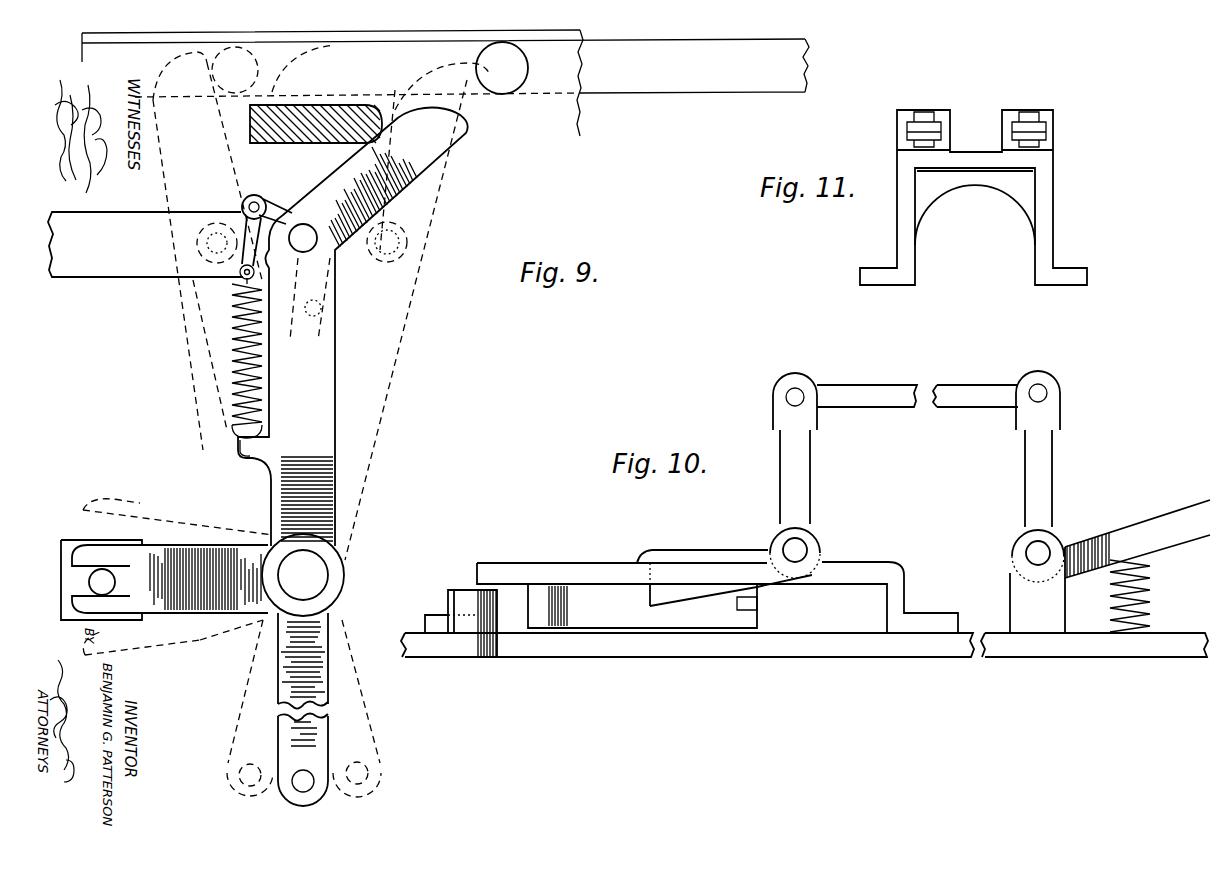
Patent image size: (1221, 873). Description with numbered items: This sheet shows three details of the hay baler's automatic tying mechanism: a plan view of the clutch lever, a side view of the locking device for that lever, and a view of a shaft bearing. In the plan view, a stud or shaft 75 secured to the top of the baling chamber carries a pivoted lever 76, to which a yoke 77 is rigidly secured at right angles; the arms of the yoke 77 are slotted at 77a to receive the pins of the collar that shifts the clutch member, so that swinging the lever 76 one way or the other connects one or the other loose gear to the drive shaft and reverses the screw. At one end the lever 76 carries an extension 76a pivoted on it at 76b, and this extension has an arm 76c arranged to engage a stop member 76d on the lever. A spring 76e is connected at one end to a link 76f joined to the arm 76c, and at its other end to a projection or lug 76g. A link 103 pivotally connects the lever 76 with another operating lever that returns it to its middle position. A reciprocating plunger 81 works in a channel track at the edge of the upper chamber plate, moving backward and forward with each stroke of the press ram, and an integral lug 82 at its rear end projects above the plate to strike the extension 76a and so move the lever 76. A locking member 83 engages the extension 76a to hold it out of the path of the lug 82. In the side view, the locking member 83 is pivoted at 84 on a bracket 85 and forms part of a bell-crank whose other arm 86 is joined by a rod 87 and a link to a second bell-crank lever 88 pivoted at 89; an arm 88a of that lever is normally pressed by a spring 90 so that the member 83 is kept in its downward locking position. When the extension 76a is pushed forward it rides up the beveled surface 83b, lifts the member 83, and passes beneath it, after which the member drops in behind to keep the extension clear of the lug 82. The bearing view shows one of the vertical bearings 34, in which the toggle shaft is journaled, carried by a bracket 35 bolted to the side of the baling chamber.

In FIG. 11, the vertical bearing 34 is at (915, 110).
In FIG. 11, the bracket 35 is at (1012, 188).
In FIG. 9, the stud or shaft 75 is at (303, 575).
In FIG. 9, the lever 76 is at (333, 444).
In FIG. 10, the lever 76 is at (682, 591).
In FIG. 9, the extension 76a is at (178, 172).
In FIG. 10, the extension 76a is at (642, 606).
In FIG. 9, the pivot of extension 76b is at (200, 246).
In FIG. 9, the arm 76c is at (250, 198).
In FIG. 10, the arm 76c is at (752, 607).
In FIG. 9, the stop member 76d is at (262, 274).
In FIG. 9, the spring 76e is at (234, 374).
In FIG. 9, the link 76f is at (244, 211).
In FIG. 9, the projection or lug 76g is at (252, 456).
In FIG. 9, the yoke 77 is at (151, 546).
In FIG. 9, the slot 77a is at (86, 582).
In FIG. 9, the reciprocating plunger 81 is at (445, 83).
In FIG. 10, the reciprocating plunger 81 is at (407, 637).
In FIG. 9, the lug 82 is at (528, 70).
In FIG. 10, the lug 82 is at (452, 600).
In FIG. 9, the locking member 83 is at (347, 108).
In FIG. 10, the locking member 83 is at (665, 598).
In FIG. 10, the beveled surface 83b is at (712, 592).
In FIG. 10, the pivot 84 is at (806, 548).
In FIG. 10, the bracket 85 is at (889, 566).
In FIG. 10, the arm 86 is at (810, 465).
In FIG. 10, the rod 87 is at (888, 390).
In FIG. 10, the bell-crank lever 88 is at (1025, 450).
In FIG. 10, the arm 88a is at (1115, 540).
In FIG. 10, the pivot 89 is at (1022, 554).
In FIG. 10, the spring 90 is at (1150, 574).
In FIG. 9, the link 103 is at (145, 244).